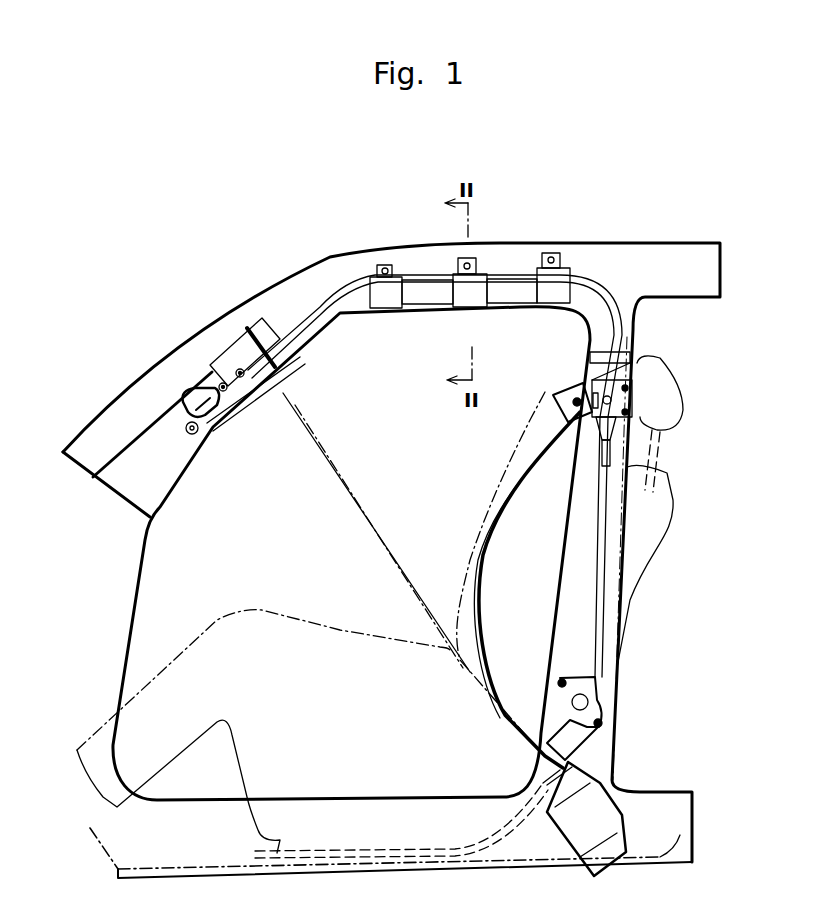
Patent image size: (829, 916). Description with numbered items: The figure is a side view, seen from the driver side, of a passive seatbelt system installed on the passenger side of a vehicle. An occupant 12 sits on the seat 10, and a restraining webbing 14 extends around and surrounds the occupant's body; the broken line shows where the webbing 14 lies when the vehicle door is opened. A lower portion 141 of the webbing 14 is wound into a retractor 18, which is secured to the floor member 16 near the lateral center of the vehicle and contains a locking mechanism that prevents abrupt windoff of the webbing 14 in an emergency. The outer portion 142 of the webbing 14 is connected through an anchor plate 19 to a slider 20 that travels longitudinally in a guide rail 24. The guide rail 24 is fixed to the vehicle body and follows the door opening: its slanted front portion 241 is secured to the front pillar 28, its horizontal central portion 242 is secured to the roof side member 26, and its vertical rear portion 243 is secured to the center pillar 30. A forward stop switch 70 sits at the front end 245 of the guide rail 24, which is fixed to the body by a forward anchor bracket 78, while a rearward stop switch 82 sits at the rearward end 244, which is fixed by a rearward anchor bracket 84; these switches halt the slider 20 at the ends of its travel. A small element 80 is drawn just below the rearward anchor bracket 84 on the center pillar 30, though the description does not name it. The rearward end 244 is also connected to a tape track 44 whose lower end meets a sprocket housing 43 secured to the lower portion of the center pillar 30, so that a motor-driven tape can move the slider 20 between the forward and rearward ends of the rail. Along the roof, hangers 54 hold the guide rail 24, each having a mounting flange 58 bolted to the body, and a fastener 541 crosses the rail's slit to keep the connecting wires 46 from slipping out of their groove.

The seat 10 is at (643, 558).
The occupant 12 is at (273, 610).
The restraining webbing 14 is at (517, 457).
The floor member 16 is at (665, 848).
The retractor 18 is at (597, 800).
The anchor plate 19 is at (552, 400).
The slider 20 is at (585, 390).
The guide rail 24 is at (507, 288).
The roof side member 26 is at (427, 260).
The front pillar 28 is at (242, 413).
The center pillar 30 is at (566, 547).
The sprocket housing 43 is at (597, 698).
The tape track 44 is at (598, 607).
The connecting wires 46 is at (190, 400).
The hanger 54 is at (567, 272).
The mounting flange 58 is at (374, 273).
The forward stop switch 70 is at (203, 413).
The forward anchor bracket 78 is at (192, 435).
The release member 80 is at (612, 455).
The rearward stop switch 82 is at (565, 420).
The rearward anchor bracket 84 is at (633, 401).
The portion of the webbing 141 is at (530, 745).
The outer portion of the webbing 142 is at (548, 420).
The slanted front portion 241 is at (280, 342).
The horizontal central portion 242 is at (417, 293).
The vertical rear portion 243 is at (608, 333).
The rearward end 244 is at (640, 363).
The front end 245 is at (217, 377).
The fastener 541 is at (277, 360).